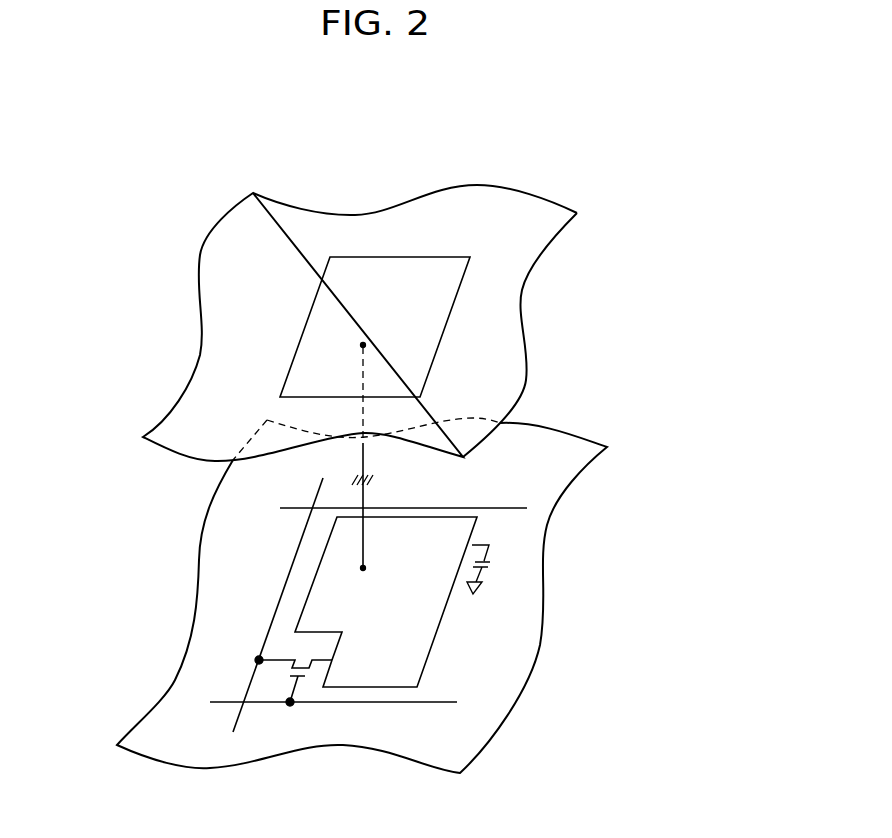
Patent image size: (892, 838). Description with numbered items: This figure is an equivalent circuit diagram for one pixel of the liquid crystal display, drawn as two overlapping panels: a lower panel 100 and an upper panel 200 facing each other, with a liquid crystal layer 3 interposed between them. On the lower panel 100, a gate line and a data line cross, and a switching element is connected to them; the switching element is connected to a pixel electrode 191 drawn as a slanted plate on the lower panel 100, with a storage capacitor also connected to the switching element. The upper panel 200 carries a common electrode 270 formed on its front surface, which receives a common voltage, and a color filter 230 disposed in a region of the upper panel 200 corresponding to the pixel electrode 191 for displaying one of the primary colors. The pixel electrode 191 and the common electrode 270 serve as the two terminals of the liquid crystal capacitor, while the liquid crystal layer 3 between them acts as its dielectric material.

The liquid crystal layer 3 is at (130, 508).
The lower panel 100 is at (392, 595).
The upper panel 200 is at (396, 323).
The color filter 230 is at (321, 282).
The common electrode 270 is at (522, 287).
The pixel electrode 191 is at (437, 633).